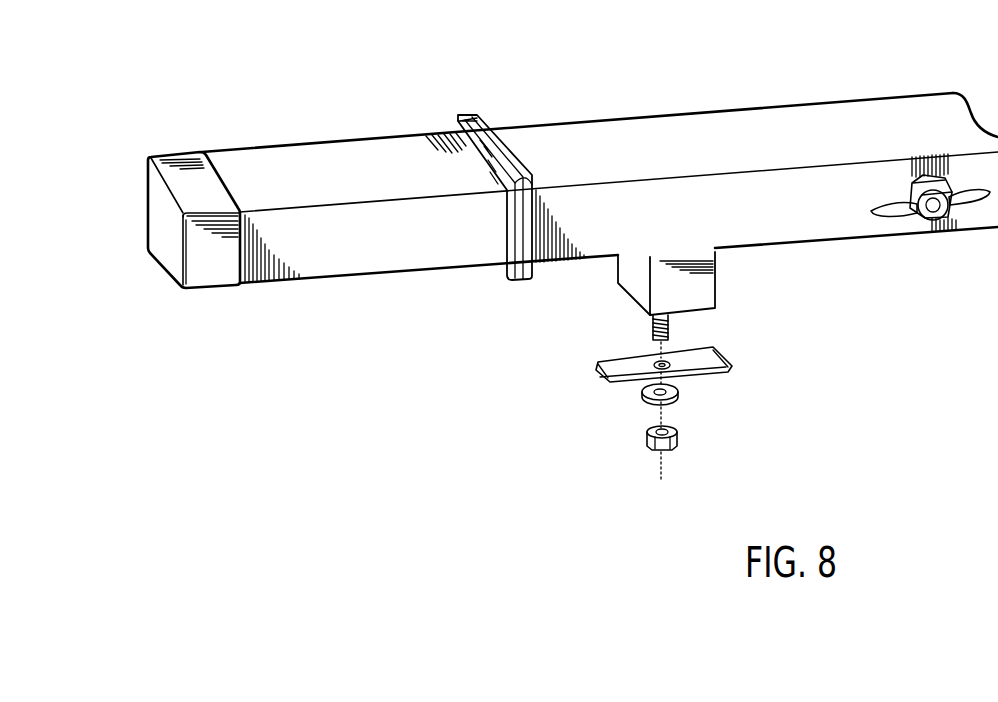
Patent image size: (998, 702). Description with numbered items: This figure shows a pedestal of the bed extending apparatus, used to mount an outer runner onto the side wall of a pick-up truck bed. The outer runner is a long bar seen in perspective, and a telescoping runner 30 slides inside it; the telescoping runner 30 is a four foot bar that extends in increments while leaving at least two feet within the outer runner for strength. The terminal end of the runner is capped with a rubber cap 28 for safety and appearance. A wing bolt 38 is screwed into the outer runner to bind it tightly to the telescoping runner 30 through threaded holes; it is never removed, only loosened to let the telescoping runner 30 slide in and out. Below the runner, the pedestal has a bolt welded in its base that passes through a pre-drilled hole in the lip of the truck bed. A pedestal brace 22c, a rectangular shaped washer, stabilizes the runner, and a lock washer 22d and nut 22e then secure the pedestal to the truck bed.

The telescoping runner 30 is at (407, 252).
The rubber cap 28 is at (463, 113).
The wing bolt 38 is at (910, 200).
The pedestal brace 22c is at (598, 363).
The lock washer 22d is at (637, 394).
The nut 22e is at (680, 425).